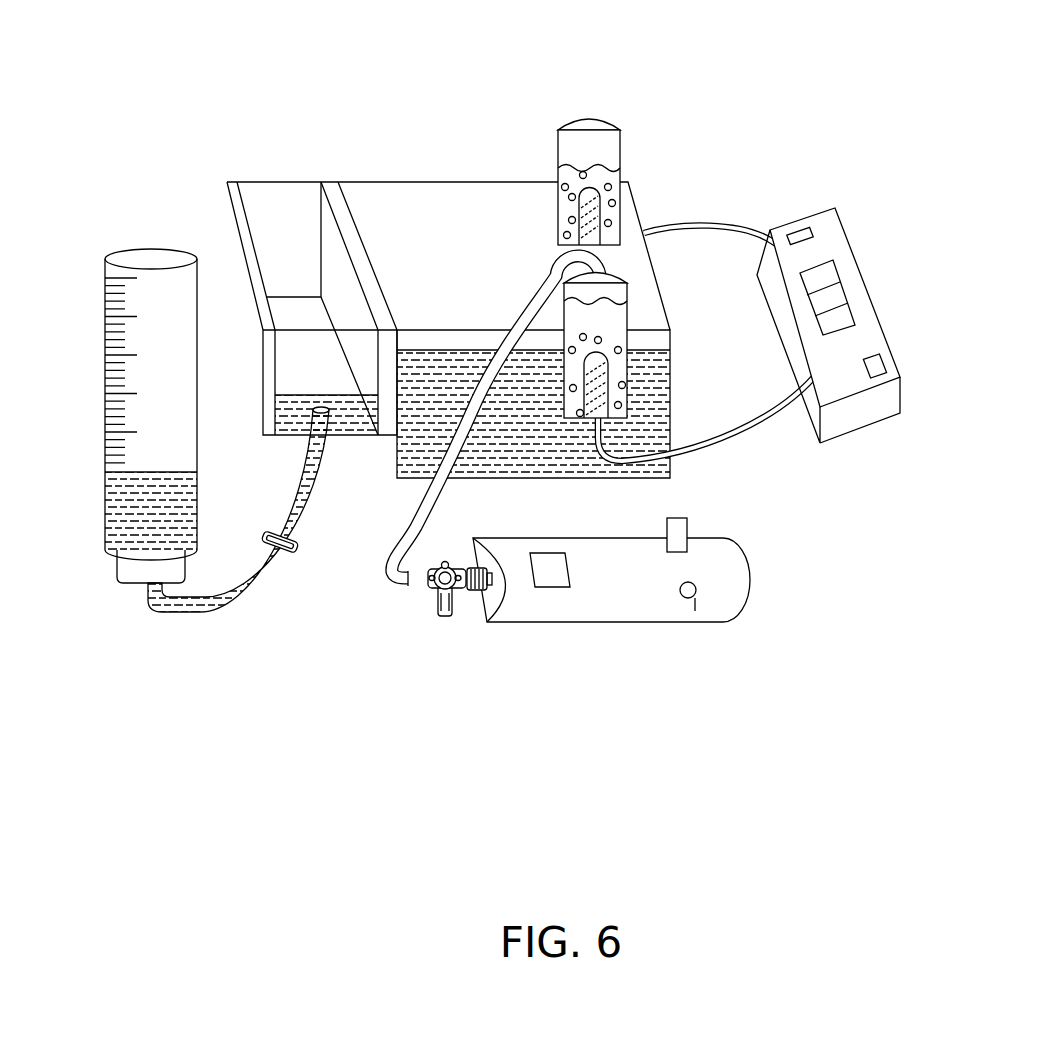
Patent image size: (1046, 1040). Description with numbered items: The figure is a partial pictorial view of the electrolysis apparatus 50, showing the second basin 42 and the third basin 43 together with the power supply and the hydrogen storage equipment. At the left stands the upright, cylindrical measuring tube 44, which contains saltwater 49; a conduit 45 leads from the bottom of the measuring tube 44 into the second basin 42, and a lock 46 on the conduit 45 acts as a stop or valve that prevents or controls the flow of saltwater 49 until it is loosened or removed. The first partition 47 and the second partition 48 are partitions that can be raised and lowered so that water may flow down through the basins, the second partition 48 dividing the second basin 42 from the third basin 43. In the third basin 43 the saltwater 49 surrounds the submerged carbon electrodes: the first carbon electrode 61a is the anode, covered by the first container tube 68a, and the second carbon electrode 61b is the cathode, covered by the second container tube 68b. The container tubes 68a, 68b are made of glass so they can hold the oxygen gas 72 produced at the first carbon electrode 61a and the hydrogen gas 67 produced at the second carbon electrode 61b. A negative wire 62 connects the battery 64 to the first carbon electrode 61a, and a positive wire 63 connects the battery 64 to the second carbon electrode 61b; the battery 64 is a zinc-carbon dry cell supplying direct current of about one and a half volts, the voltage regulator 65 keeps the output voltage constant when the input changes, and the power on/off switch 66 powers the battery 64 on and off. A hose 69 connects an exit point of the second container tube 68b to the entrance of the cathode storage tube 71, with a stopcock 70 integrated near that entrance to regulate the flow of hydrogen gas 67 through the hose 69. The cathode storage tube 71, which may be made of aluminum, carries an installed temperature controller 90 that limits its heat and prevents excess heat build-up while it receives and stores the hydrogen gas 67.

The second basin 42 is at (330, 308).
The third basin 43 is at (672, 479).
The measuring tube 44 is at (103, 446).
The conduit 45 is at (188, 617).
The lock 46 is at (288, 556).
The first partition 47 is at (229, 191).
The second partition 48 is at (338, 193).
The saltwater 49 is at (576, 466).
The electrolysis apparatus 50 is at (395, 183).
The first carbon electrode 61a is at (590, 202).
The second carbon electrode 61b is at (593, 393).
The wire 62 is at (720, 224).
The wire 63 is at (728, 437).
The battery 64 is at (847, 297).
The voltage regulator 65 is at (810, 232).
The power on/off switch 66 is at (875, 363).
The hydrogen gas 67 is at (624, 349).
The first container tube 68a is at (627, 129).
The second container tube 68b is at (602, 300).
The hose 69 is at (513, 322).
The stopcock 70 is at (432, 593).
The cathode storage tube 71 is at (611, 607).
The oxygen gas 72 is at (586, 170).
The temperature controller 90 is at (696, 597).